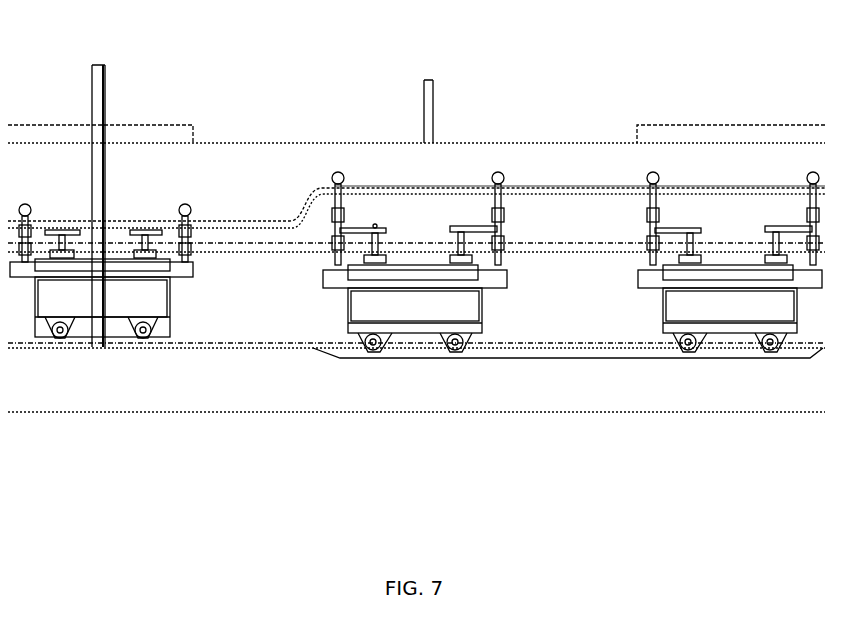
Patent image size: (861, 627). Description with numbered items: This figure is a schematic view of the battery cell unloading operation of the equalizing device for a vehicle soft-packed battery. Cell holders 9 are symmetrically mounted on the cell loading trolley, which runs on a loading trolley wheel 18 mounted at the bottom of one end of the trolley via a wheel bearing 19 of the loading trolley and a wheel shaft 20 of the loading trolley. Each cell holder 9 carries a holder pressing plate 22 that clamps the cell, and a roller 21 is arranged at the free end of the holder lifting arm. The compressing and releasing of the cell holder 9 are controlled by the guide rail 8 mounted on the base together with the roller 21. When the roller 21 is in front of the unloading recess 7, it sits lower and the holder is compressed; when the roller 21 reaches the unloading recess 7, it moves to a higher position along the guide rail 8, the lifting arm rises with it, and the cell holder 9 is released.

The unloading recess 7 is at (340, 358).
The guide rail 8 is at (573, 188).
The cell holder 9 is at (294, 140).
The loading trolley wheel 18 is at (415, 381).
The wheel bearing of the loading trolley 19 is at (407, 415).
The wheel shaft of the loading trolley 20 is at (410, 448).
The roller 21 is at (335, 175).
The holder pressing plate 22 is at (388, 243).